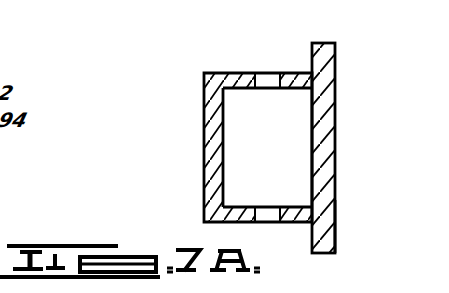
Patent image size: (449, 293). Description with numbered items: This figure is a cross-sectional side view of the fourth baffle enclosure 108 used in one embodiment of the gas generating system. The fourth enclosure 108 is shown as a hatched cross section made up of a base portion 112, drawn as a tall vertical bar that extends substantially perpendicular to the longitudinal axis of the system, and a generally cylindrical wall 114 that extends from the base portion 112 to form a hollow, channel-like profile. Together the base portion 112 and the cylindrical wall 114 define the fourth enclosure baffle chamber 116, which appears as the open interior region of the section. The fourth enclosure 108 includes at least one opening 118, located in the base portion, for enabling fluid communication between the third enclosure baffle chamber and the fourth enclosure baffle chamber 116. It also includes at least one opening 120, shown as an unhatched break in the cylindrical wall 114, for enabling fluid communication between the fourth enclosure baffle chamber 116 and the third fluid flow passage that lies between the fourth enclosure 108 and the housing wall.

The fourth enclosure 108 is at (337, 236).
The base portion 112 is at (337, 48).
The cylindrical wall 114 is at (207, 75).
The fourth enclosure baffle chamber 116 is at (237, 175).
The opening 118 is at (335, 143).
The opening 120 is at (268, 222).